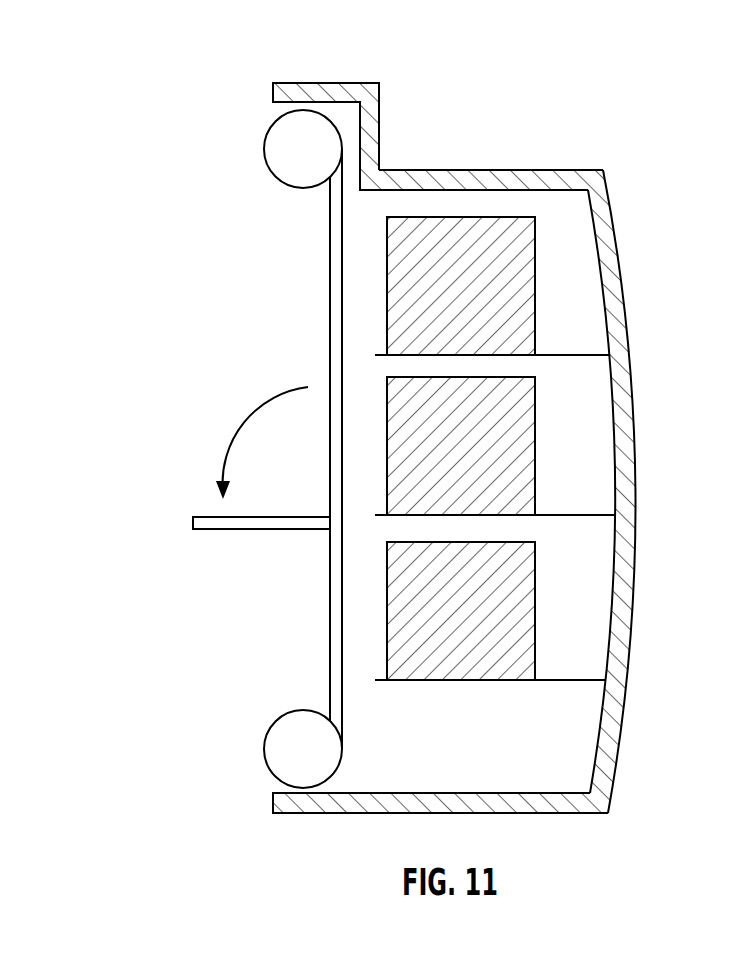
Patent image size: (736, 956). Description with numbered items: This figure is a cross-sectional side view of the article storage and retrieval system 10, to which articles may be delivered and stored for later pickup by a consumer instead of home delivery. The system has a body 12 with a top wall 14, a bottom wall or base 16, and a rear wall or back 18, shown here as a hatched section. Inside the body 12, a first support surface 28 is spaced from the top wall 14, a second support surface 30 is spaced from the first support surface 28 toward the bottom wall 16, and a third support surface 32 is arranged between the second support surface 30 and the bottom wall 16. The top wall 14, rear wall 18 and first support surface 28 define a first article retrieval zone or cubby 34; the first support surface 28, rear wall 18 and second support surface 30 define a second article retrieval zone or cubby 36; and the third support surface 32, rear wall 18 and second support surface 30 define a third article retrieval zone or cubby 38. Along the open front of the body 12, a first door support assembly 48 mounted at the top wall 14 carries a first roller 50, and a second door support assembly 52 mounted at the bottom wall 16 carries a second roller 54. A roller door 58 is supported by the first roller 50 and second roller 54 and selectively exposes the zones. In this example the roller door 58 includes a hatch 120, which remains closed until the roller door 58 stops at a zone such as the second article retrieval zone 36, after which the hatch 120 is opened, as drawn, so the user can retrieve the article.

The article storage and retrieval system 10 is at (662, 569).
The body 12 is at (325, 75).
The top wall 14 is at (552, 180).
The bottom wall 16 is at (538, 806).
The rear wall 18 is at (622, 411).
The first support surface 28 is at (594, 353).
The second support surface 30 is at (608, 513).
The third support surface 32 is at (600, 678).
The first article retrieval zone 34 is at (583, 298).
The second article retrieval zone 36 is at (583, 461).
The third article retrieval zone 38 is at (583, 624).
The first door support assembly 48 is at (314, 198).
The first roller 50 is at (318, 163).
The second door support assembly 52 is at (298, 700).
The second roller 54 is at (318, 763).
The roller door 58 is at (328, 573).
The hatch 120 is at (228, 532).